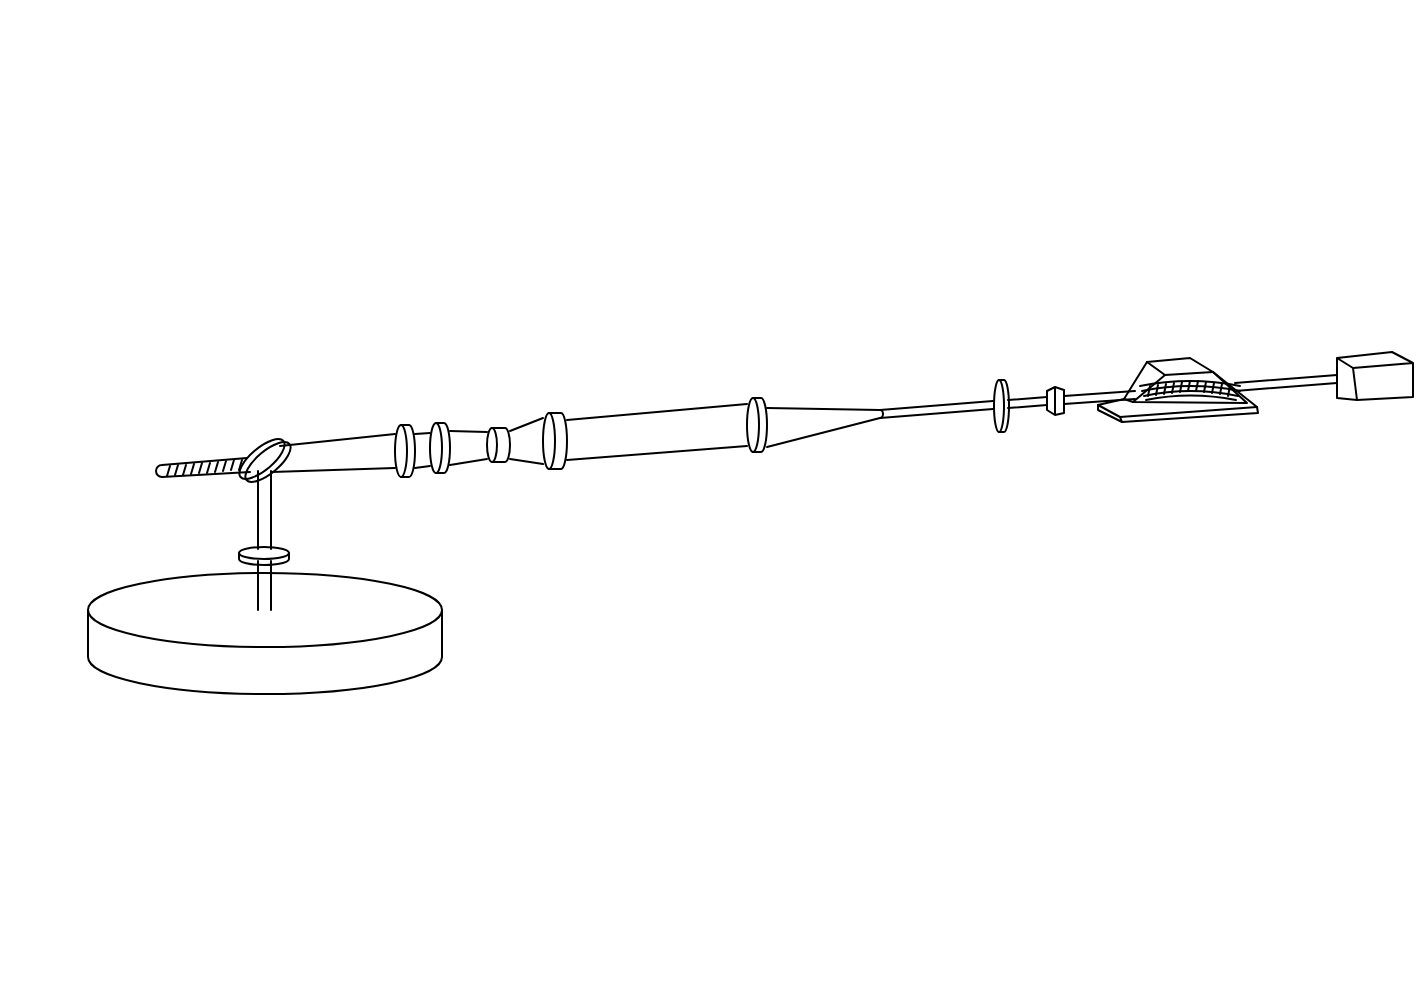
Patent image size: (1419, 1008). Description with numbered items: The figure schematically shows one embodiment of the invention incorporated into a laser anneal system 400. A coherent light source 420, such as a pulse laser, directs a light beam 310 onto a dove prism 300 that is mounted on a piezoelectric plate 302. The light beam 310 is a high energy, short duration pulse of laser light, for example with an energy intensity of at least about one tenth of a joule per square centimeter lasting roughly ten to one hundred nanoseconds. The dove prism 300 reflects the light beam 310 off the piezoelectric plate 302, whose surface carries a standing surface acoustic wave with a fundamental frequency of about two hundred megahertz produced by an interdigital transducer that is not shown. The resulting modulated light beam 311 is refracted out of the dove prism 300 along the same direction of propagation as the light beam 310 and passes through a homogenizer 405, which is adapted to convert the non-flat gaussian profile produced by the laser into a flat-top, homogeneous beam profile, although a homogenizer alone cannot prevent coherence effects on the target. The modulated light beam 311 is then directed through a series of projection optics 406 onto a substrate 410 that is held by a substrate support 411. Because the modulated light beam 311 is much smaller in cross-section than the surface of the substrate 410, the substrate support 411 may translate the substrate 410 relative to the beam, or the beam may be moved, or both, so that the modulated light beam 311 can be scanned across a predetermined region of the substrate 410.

The laser anneal system 400 is at (433, 132).
The projection optics 406 is at (250, 418).
The homogenizer 405 is at (1080, 360).
The modulated light beam 311 is at (1108, 392).
The dove prism 300 is at (1165, 360).
The piezoelectric plate 302 is at (1107, 418).
The light beam 310 is at (1322, 375).
The coherent light source 420 is at (1395, 356).
The substrate 410 is at (425, 612).
The substrate support 411 is at (337, 676).